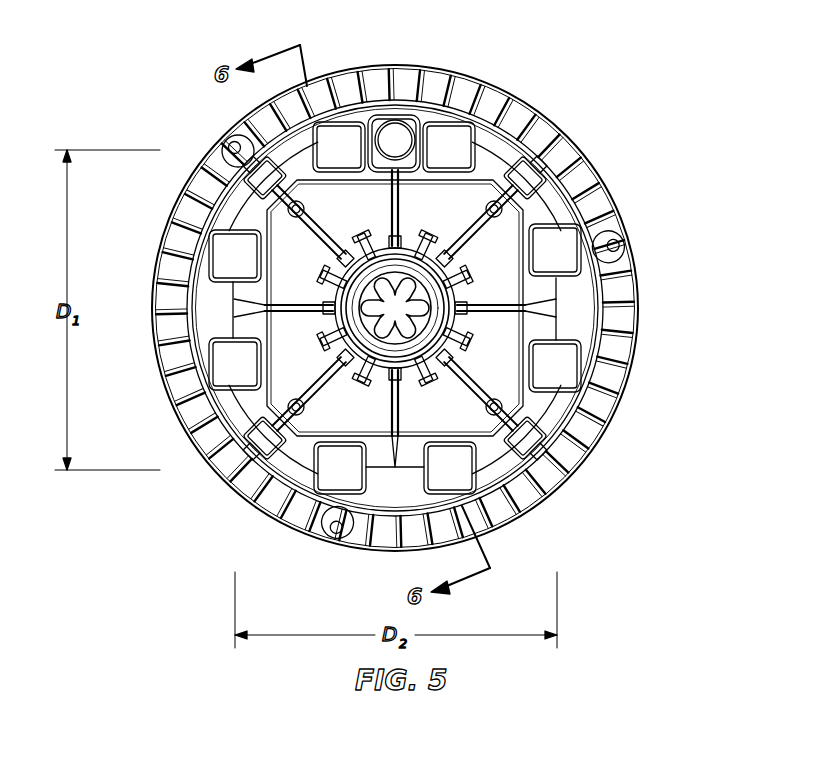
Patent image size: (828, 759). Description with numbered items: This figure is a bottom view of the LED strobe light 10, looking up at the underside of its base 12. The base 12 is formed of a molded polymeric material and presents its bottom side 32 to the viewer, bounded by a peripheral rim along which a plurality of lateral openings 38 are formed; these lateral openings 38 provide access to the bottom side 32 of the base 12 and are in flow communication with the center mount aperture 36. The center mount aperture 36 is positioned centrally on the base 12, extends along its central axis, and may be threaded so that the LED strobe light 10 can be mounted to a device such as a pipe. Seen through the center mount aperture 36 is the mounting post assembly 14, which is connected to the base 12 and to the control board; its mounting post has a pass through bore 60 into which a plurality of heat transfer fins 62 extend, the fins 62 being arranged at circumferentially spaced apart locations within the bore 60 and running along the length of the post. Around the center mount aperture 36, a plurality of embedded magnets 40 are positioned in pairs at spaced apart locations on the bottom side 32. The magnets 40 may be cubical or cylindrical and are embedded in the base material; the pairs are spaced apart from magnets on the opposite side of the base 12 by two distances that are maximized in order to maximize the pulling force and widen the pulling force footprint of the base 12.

The LED strobe light 10 is at (608, 105).
The base 12 is at (500, 86).
The mounting post assembly 14 is at (388, 356).
The bottom side 32 is at (570, 306).
The center mount aperture 36 is at (355, 322).
The lateral openings 38 is at (585, 173).
The embedded magnets 40 is at (225, 260).
The pass through bore 60 is at (397, 268).
The heat transfer fins 62 is at (415, 322).